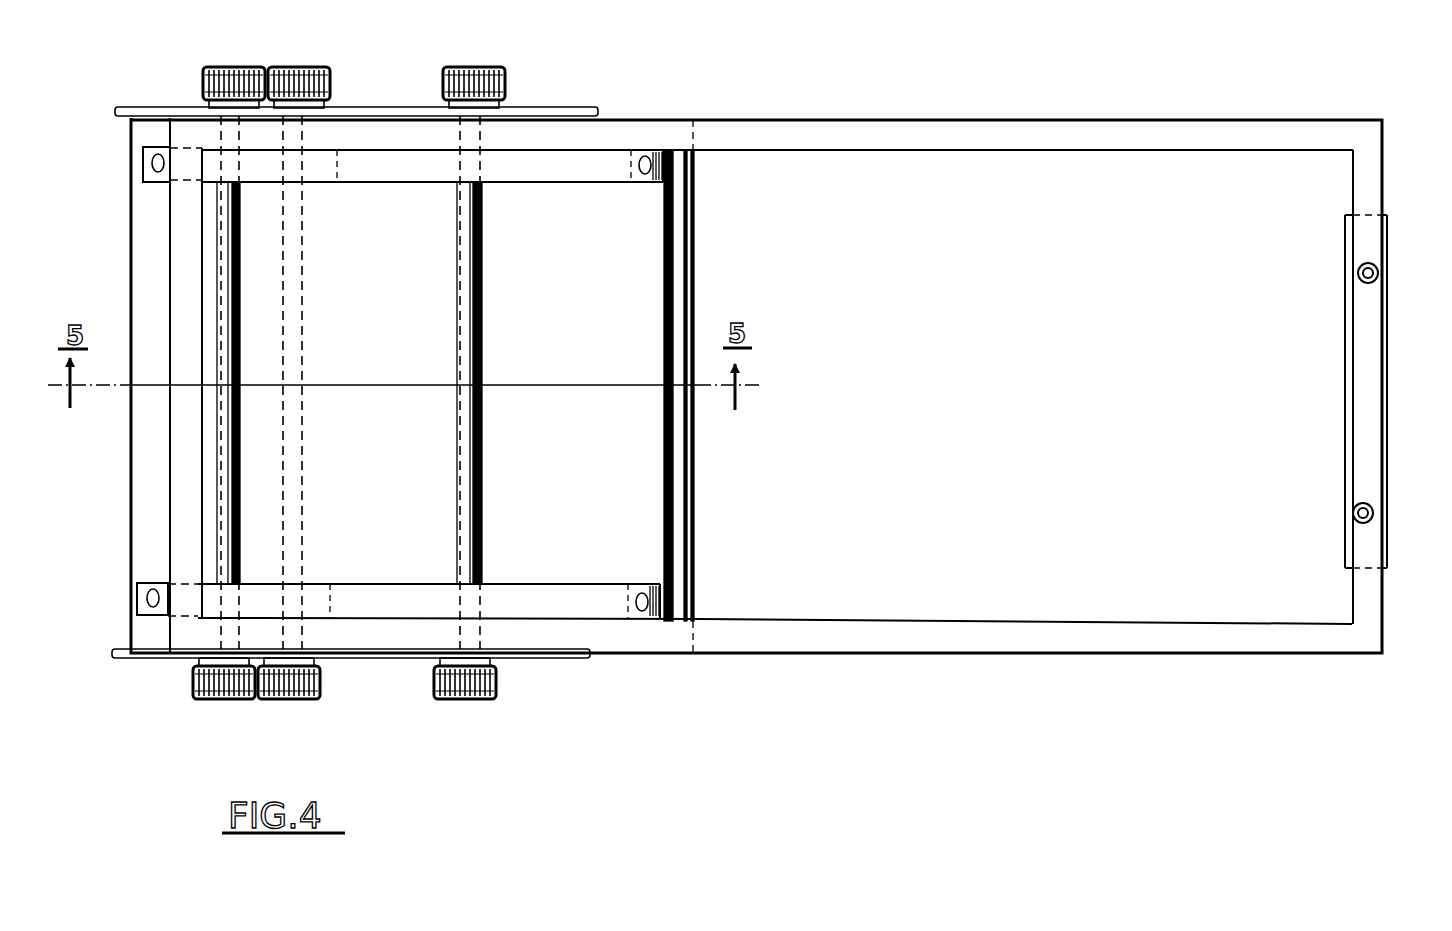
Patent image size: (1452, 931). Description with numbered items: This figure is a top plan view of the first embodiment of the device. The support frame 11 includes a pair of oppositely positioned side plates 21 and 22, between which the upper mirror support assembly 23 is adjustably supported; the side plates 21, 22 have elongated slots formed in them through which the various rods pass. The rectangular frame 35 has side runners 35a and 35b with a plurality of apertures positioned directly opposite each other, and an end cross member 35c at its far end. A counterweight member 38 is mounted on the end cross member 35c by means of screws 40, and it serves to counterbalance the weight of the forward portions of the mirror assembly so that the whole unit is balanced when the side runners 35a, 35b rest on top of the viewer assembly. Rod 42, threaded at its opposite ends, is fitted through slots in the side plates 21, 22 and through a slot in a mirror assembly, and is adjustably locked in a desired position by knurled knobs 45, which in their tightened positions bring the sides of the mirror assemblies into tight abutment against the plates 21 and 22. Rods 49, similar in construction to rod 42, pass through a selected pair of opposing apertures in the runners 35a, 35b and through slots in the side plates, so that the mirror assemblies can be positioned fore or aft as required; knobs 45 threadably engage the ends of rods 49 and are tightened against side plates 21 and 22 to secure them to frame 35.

The support frame 11 is at (762, 386).
The side plate 21 is at (540, 658).
The side plate 22 is at (556, 107).
The mirror support assembly 23 is at (630, 492).
The rectangular frame 35 is at (756, 369).
The side runner 35a is at (842, 121).
The side runner 35b is at (903, 645).
The end cross member 35c is at (1355, 595).
The counterweight member 38 is at (1390, 355).
The screws 40 is at (1358, 273).
The rod 42 is at (293, 413).
The knurled knobs 45 is at (307, 70).
The rods 49 is at (472, 258).